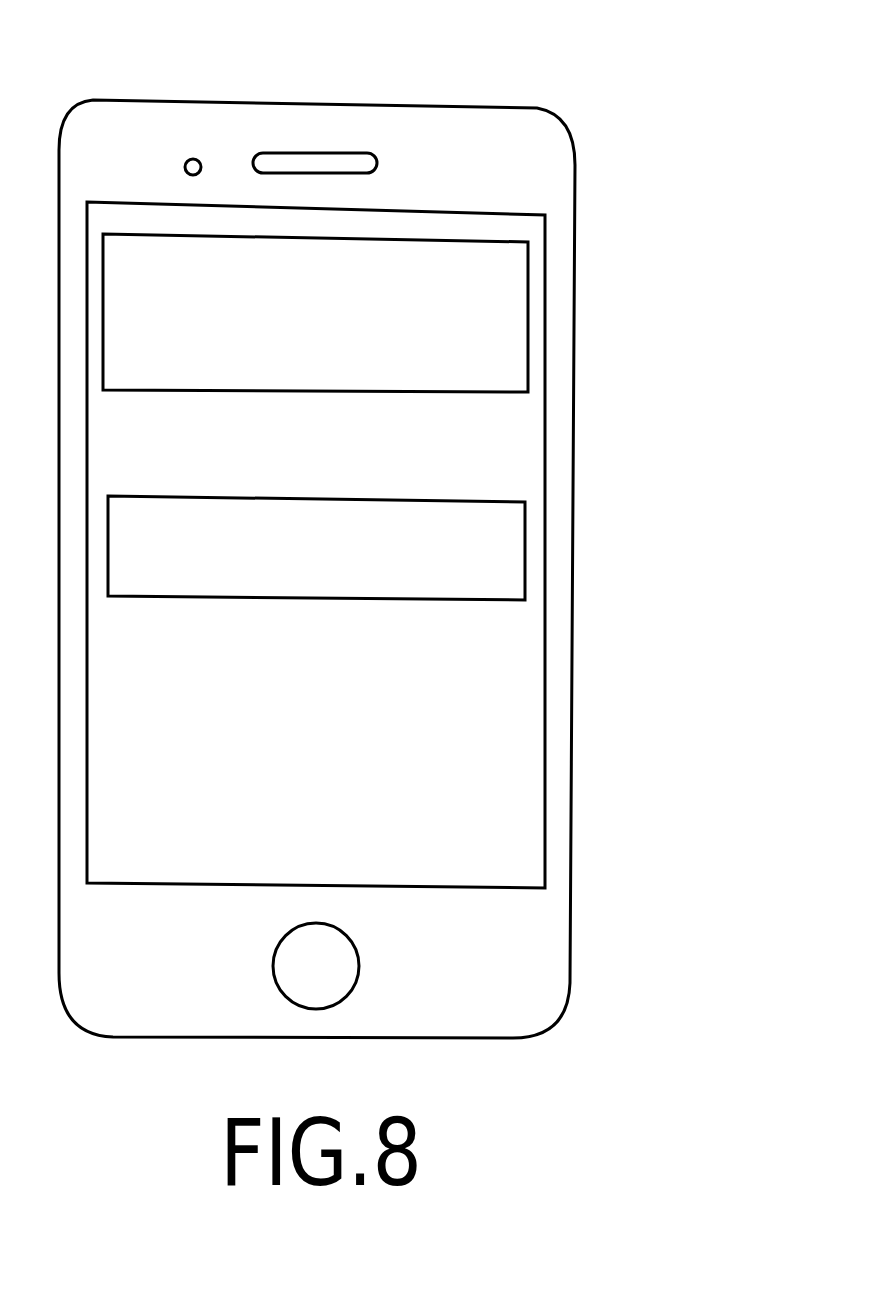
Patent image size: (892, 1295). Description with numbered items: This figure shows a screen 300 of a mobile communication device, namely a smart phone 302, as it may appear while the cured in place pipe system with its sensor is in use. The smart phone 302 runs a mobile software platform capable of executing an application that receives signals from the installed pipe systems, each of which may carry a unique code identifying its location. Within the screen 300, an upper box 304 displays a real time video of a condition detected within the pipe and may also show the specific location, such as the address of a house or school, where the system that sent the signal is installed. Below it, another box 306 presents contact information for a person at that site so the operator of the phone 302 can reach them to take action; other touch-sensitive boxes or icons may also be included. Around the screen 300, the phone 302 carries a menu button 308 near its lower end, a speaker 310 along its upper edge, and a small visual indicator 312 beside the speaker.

The screen 300 is at (523, 450).
The smart phone 302 is at (459, 107).
The box 304 is at (507, 317).
The box 306 is at (503, 562).
The menu button 308 is at (342, 965).
The speaker 310 is at (303, 155).
The visual indicator 312 is at (189, 159).